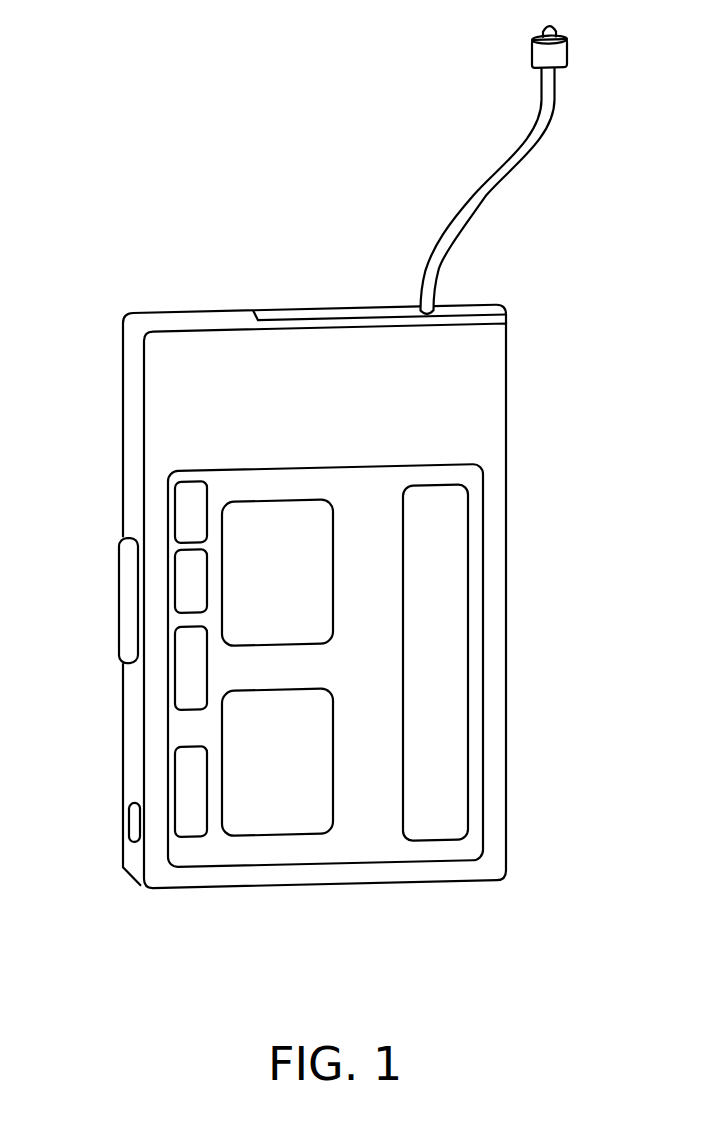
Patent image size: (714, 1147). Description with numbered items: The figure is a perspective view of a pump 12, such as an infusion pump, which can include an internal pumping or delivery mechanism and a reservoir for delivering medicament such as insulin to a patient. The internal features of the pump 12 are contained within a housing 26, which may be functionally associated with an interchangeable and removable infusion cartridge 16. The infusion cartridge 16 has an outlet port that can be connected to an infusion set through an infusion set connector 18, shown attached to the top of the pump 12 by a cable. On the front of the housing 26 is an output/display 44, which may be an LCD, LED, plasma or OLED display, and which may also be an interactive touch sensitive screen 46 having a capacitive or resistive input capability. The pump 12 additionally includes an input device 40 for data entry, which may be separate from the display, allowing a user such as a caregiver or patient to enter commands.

The pump 12 is at (112, 205).
The infusion cartridge 16 is at (330, 314).
The infusion set connector 18 is at (565, 65).
The housing 26 is at (487, 389).
The output/display 44 is at (476, 491).
The touch sensitive screen 46 is at (445, 720).
The input device 40 is at (127, 585).